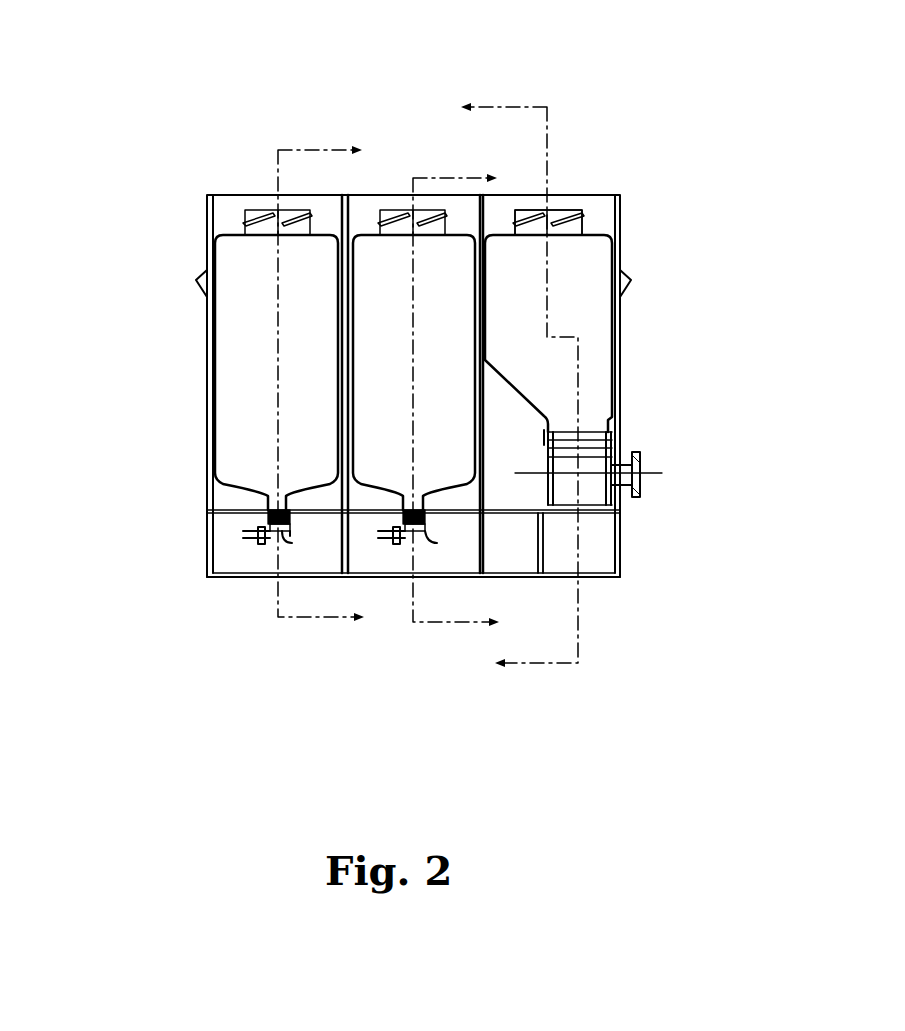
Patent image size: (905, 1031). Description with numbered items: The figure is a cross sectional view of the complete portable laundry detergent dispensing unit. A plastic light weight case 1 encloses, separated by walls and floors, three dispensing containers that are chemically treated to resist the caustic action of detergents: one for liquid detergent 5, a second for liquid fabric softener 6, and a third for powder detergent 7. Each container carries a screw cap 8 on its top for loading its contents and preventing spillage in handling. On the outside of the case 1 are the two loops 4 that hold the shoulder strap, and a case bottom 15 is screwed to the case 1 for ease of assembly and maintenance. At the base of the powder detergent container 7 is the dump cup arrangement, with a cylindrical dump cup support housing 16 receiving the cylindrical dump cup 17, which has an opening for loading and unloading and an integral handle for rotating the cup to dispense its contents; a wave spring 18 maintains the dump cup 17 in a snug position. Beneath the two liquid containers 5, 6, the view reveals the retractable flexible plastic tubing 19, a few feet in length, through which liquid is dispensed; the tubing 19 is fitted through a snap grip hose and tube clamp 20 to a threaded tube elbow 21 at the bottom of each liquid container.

The case 1 is at (621, 367).
The loops 4 is at (633, 269).
The liquid detergent container 5 is at (233, 234).
The liquid fabric softener container 6 is at (373, 234).
The powder detergent container 7 is at (595, 234).
The screw caps 8 is at (562, 209).
The case bottom 15 is at (599, 578).
The cylindrical dump cup support housing 16 is at (616, 423).
The dump cup 17 is at (644, 493).
The wave spring 18 is at (548, 514).
The flexible plastic tubing 19 is at (244, 543).
The snap grip hose and tube clamp 20 is at (261, 548).
The threaded tube elbow 21 is at (291, 531).